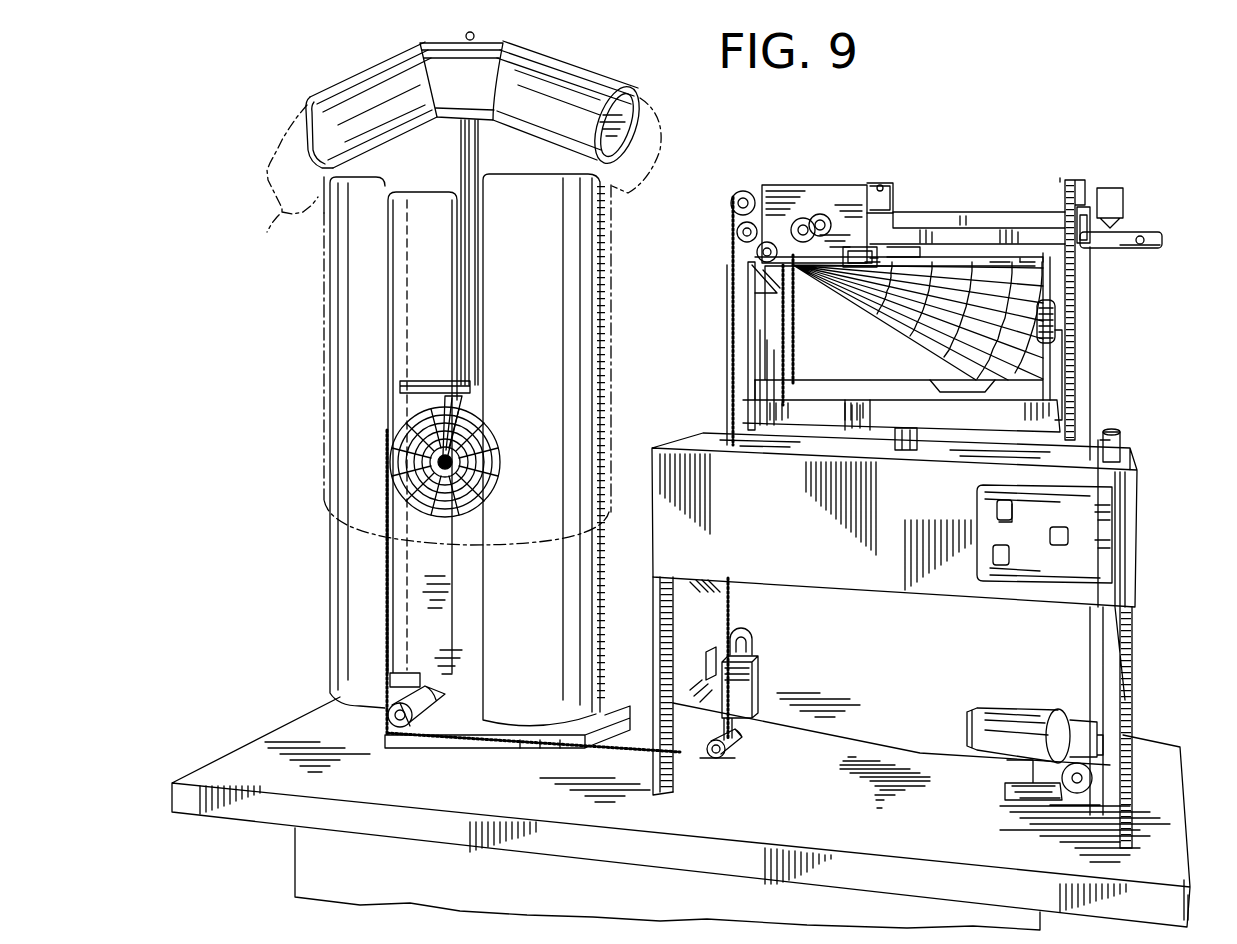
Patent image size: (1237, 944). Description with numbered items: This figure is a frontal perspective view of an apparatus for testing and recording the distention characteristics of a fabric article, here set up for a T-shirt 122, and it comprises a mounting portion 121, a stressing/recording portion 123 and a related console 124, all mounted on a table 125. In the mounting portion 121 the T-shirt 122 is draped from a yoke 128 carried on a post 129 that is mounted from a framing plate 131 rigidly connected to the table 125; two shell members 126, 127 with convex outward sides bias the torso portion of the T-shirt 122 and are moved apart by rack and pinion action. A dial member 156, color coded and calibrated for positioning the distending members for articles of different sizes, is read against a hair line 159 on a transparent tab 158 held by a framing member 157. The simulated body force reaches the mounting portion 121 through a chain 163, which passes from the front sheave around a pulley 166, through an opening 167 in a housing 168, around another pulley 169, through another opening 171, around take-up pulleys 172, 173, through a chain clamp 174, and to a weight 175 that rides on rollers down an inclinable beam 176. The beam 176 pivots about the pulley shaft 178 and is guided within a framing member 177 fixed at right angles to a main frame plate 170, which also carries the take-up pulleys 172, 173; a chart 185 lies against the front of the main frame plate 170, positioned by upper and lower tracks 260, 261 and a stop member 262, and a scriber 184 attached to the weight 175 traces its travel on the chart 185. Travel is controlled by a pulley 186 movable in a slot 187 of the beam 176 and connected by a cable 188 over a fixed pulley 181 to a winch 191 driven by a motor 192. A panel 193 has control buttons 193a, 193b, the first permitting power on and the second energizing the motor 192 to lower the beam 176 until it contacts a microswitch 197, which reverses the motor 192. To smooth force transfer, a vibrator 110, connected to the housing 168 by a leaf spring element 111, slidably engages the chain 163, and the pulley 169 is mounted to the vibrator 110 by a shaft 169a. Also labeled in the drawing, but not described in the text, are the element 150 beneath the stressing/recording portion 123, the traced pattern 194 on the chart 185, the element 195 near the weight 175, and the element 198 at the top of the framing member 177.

The vibrator 110 is at (758, 680).
The leaf spring element 111 is at (760, 645).
The mounting portion 121 is at (318, 448).
The T-shirt 122 is at (266, 233).
The stressing/recording portion 123 is at (1012, 184).
The console 124 is at (1141, 501).
The table 125 is at (242, 745).
The shell member 126 is at (335, 545).
The shell member 127 is at (565, 620).
The yoke 128 is at (548, 80).
The post 129 is at (470, 157).
The framing plate 131 is at (420, 590).
The support foot 150 is at (917, 452).
The dial member 156 is at (455, 515).
The framing member 157 is at (433, 384).
The transparent tab 158 is at (472, 440).
The hair line 159 is at (470, 405).
The front chain 163 is at (390, 617).
The pulley 166 is at (398, 728).
The opening 167 is at (680, 770).
The housing 168 is at (654, 648).
The pulley 169 is at (726, 766).
The shaft 169a is at (730, 751).
The main frame plate 170 is at (745, 285).
The opening 171 is at (718, 443).
The take-up pulley 172 is at (731, 205).
The take-up pulley 173 is at (737, 233).
The chain clamp 174 is at (752, 292).
The weight 175 is at (815, 182).
The inclinable beam 176 is at (973, 232).
The framing member 177 is at (1072, 402).
The pulley shaft 178 is at (803, 218).
The fixed pulley 181 is at (1082, 188).
The scriber 184 is at (858, 270).
The chart 185 is at (1017, 297).
The pulley 186 is at (1088, 252).
The slot 187 is at (1140, 234).
The cable 188 is at (1091, 347).
The winch 191 is at (1093, 778).
The motor 192 is at (1027, 715).
The panel 193 is at (1110, 537).
The control button 193a is at (995, 510).
The control button 193b is at (998, 566).
The scan pattern 194 is at (942, 331).
The head 195 is at (918, 252).
The microswitch 197 is at (1120, 442).
The block 198 is at (1110, 206).
The upper track 260 is at (1020, 258).
The lower track 261 is at (908, 398).
The stop member 262 is at (1056, 325).